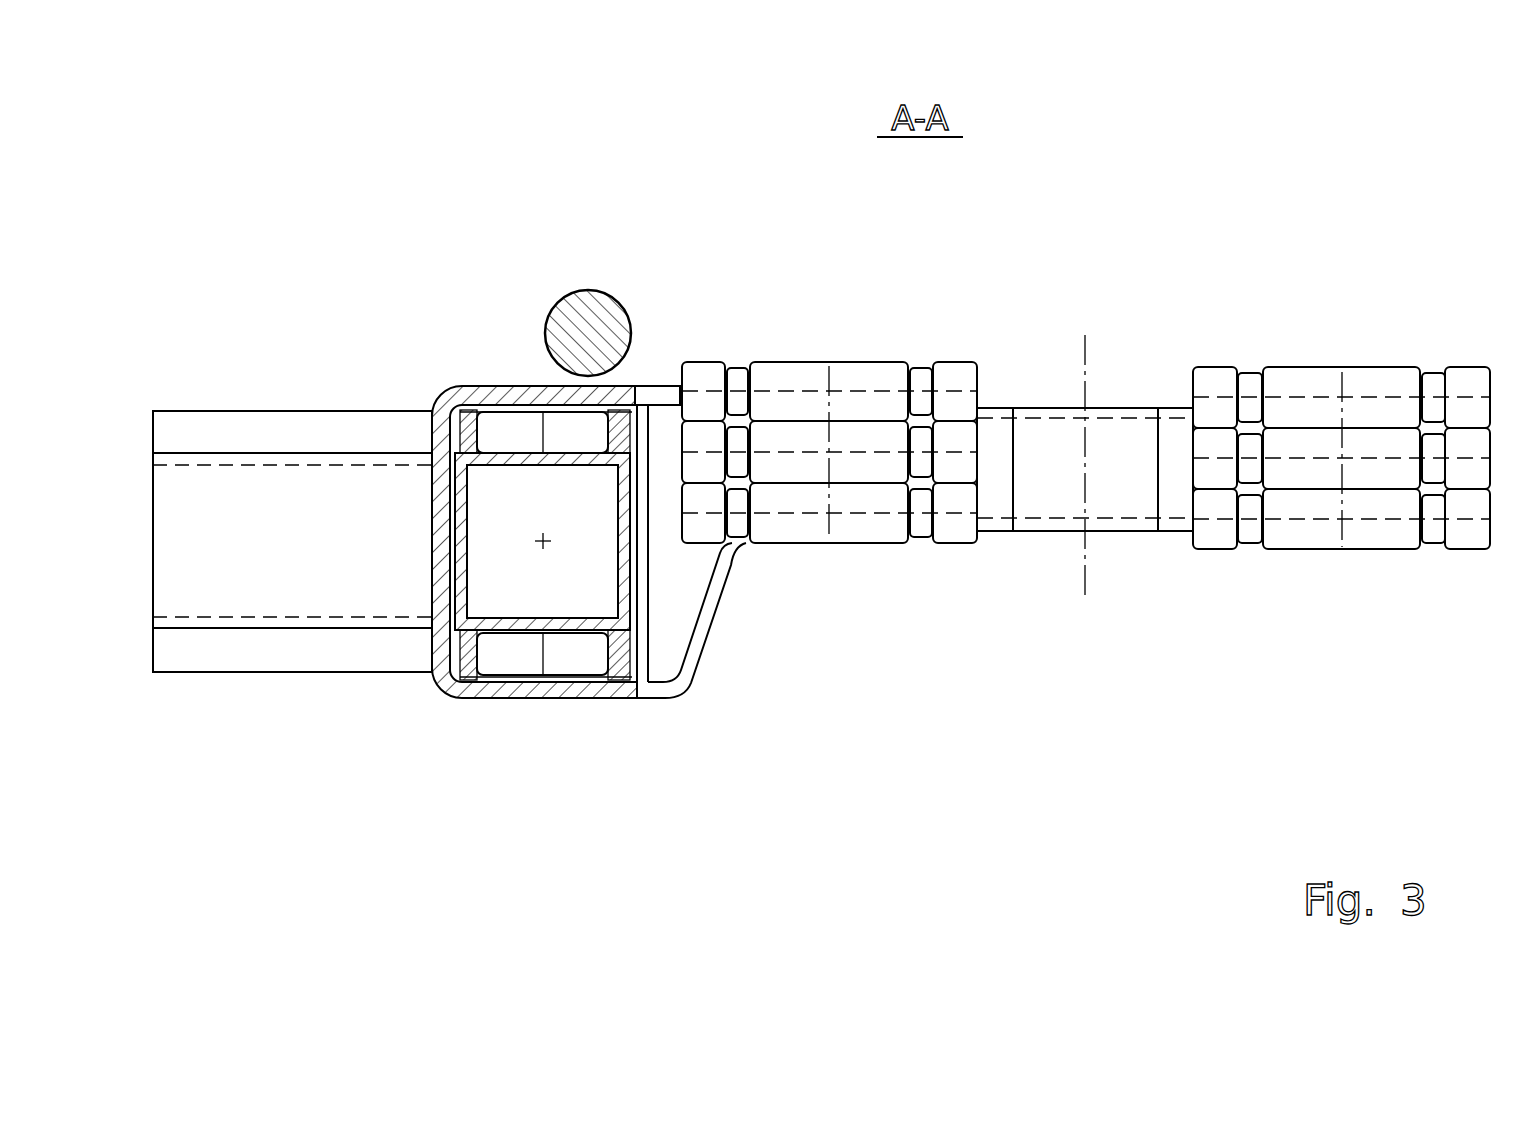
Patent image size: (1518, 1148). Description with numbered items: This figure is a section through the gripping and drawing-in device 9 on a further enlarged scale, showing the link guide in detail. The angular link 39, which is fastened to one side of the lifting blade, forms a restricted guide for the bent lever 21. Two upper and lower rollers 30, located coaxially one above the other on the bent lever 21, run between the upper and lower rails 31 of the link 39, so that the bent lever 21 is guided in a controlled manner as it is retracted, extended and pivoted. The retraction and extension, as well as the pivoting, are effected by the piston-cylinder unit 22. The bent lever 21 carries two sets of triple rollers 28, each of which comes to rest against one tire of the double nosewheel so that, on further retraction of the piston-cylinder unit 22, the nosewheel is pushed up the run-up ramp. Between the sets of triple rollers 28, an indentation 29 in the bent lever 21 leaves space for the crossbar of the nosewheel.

The gripping and drawing-in device 9 is at (712, 321).
The bent lever 21 is at (1175, 560).
The piston-cylinder unit 22 is at (588, 333).
The triple rollers 28 is at (1315, 507).
The indentation 29 is at (1053, 498).
The upper and lower rollers 30 is at (573, 427).
The upper and lower rails 31 is at (467, 423).
The angular link 39 is at (273, 385).